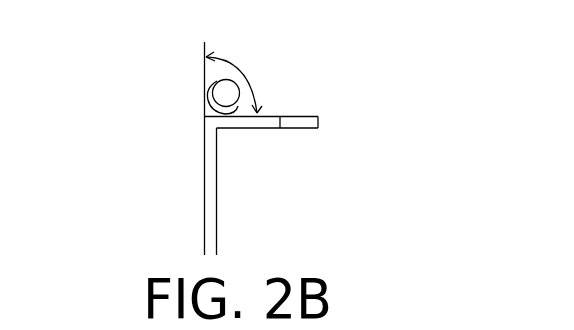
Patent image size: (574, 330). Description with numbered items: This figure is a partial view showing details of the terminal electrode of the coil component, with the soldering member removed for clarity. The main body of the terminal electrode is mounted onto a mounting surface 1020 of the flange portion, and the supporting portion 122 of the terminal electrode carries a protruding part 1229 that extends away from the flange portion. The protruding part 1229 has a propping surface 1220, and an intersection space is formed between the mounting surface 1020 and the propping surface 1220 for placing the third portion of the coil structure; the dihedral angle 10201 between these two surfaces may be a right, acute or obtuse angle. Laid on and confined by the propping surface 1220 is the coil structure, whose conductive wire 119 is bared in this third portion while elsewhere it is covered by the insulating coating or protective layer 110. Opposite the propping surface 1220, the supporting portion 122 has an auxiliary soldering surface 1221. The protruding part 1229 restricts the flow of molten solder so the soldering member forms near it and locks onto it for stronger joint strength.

The mounting surface 1020 is at (204, 43).
The dihedral angle 10201 is at (246, 82).
The insulating coating or insulating protective layer 110 is at (210, 99).
The conductive wire 119 is at (240, 106).
The supporting portion 122 is at (307, 123).
The propping surface 1220 is at (305, 117).
The auxiliary soldering surface 1221 is at (305, 128).
The protruding part 1229 is at (280, 128).